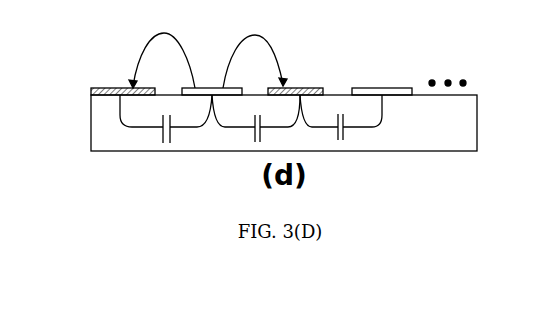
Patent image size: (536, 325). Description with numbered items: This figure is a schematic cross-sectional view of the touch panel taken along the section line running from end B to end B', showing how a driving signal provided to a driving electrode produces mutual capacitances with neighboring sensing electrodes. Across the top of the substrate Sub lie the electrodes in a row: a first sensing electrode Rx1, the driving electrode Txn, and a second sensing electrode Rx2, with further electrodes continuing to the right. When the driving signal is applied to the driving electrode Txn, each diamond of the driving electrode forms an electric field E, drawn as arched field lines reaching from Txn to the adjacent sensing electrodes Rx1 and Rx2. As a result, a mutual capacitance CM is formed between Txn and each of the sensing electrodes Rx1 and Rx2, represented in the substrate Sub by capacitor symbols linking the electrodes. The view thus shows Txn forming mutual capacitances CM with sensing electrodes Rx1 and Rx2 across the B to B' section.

The sensing electrode Rx1 is at (137, 85).
The driving electrode Txn is at (219, 84).
The sensing electrode Rx2 is at (306, 83).
The electric field E is at (208, 53).
The mutual capacitance CM is at (251, 119).
The substrate Sub is at (284, 135).
The line B-B' end B is at (63, 126).
The line B-B' end B' is at (497, 126).